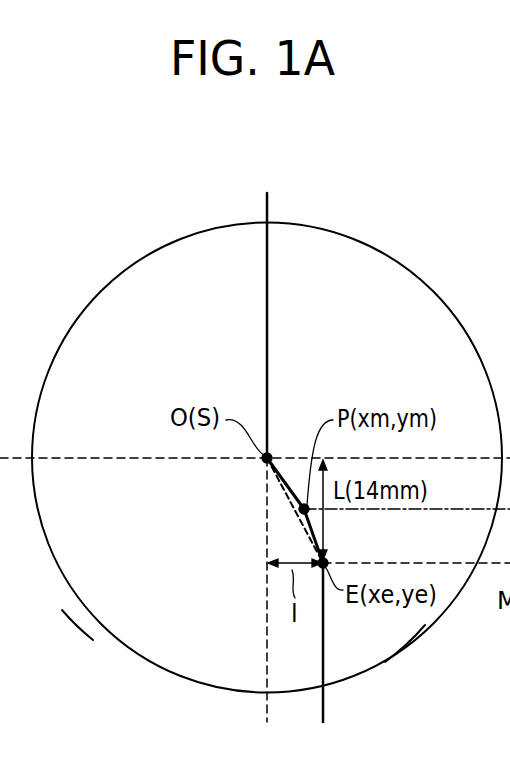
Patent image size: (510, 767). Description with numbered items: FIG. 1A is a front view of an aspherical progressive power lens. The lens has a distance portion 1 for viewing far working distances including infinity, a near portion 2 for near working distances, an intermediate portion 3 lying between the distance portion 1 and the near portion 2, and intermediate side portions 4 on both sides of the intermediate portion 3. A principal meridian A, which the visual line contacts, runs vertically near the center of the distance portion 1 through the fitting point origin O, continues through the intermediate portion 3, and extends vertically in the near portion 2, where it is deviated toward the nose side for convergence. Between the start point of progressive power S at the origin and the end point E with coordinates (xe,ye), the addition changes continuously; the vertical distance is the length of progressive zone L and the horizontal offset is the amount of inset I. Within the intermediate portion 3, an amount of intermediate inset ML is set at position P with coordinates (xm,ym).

The distance portion 1 is at (348, 259).
The near portion 2 is at (253, 672).
The intermediate portion 3 is at (278, 527).
The intermediate side portions 4 is at (86, 578).
The principal meridian A is at (269, 345).
The amount of intermediate inset ML is at (280, 508).